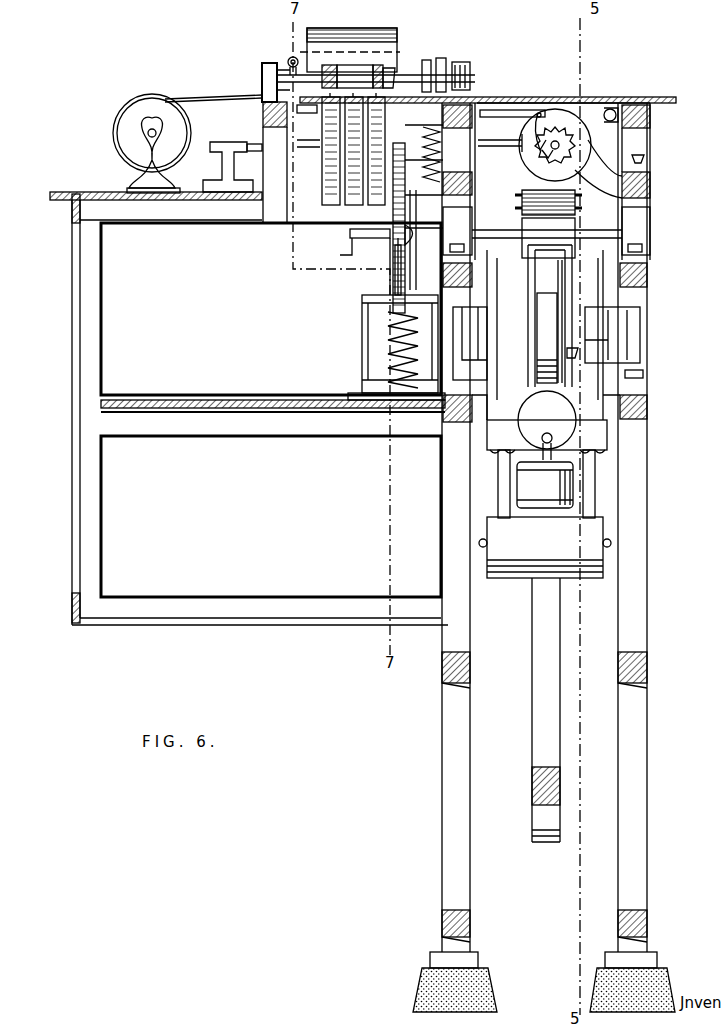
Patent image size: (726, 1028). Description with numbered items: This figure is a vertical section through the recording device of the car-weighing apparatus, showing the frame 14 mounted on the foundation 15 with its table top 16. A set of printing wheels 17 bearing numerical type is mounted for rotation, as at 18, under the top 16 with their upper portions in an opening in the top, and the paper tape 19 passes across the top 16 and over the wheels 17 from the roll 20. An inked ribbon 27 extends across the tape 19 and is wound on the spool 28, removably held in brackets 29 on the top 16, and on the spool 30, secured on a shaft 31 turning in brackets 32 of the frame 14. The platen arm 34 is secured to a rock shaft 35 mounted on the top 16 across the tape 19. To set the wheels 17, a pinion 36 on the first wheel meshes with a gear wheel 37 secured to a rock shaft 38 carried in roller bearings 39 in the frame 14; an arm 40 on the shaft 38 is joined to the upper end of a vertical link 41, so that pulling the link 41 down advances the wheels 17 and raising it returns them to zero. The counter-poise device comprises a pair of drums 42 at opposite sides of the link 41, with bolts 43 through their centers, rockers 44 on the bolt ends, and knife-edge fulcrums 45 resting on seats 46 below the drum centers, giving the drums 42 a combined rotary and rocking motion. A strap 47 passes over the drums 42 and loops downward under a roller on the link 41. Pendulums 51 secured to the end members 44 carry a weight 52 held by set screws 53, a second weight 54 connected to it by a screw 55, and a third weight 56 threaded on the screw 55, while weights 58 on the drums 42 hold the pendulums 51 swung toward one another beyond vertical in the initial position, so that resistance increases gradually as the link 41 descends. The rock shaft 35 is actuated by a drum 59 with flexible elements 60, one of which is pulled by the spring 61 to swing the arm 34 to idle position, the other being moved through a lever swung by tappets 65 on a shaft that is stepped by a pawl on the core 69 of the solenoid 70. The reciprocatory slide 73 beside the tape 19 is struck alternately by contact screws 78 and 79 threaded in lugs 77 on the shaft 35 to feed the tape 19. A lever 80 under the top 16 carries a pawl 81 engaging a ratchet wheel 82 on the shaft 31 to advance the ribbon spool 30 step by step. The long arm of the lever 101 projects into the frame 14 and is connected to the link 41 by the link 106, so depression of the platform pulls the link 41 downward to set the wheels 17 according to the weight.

The frame 14 is at (442, 735).
The foundation 15 is at (430, 987).
The table top 16 is at (522, 97).
The printing wheels 17 is at (376, 206).
The rotation mounting 18 is at (312, 148).
The tape 19 is at (393, 80).
The roll 20 is at (395, 32).
The inked ribbon 27 is at (195, 96).
The spool 28 is at (130, 110).
The brackets 29 is at (152, 155).
The spool 30 is at (578, 128).
The shaft 31 is at (562, 146).
The brackets 32 is at (648, 182).
The arm 34 is at (355, 70).
The rock shaft 35 is at (412, 78).
The pinion 36 is at (398, 158).
The gear wheel 37 is at (395, 291).
The rock shaft 38 is at (618, 237).
The roller bearings 39 is at (466, 230).
The arm 40 is at (575, 210).
The vertical link 41 is at (530, 272).
The drums 42 is at (564, 300).
The bolts 43 is at (575, 353).
The rockers 44 is at (476, 328).
The knife-edge fulcrums 45 is at (645, 373).
The seats 46 is at (648, 392).
The strap 47 is at (545, 312).
The pendulums 51 is at (500, 490).
The weight 52 is at (510, 575).
The set screws 53 is at (612, 541).
The second weight 54 is at (600, 437).
The screw 55 is at (550, 518).
The third weight 56 is at (572, 495).
The weights 58 is at (532, 432).
The drum 59 is at (460, 66).
The flexible elements 60 is at (440, 62).
The spring 61 is at (470, 140).
The tappets 65 is at (355, 238).
The core 69 is at (395, 265).
The solenoid 70 is at (362, 343).
The reciprocatory slide 73 is at (275, 92).
The lugs 77 is at (291, 57).
The contact screw 78 is at (263, 120).
The contact screw 79 is at (288, 60).
The lever 80 is at (498, 110).
The pawl 81 is at (535, 138).
The ratchet wheel 82 is at (540, 160).
The lever 101 is at (532, 778).
The link 106 is at (540, 686).